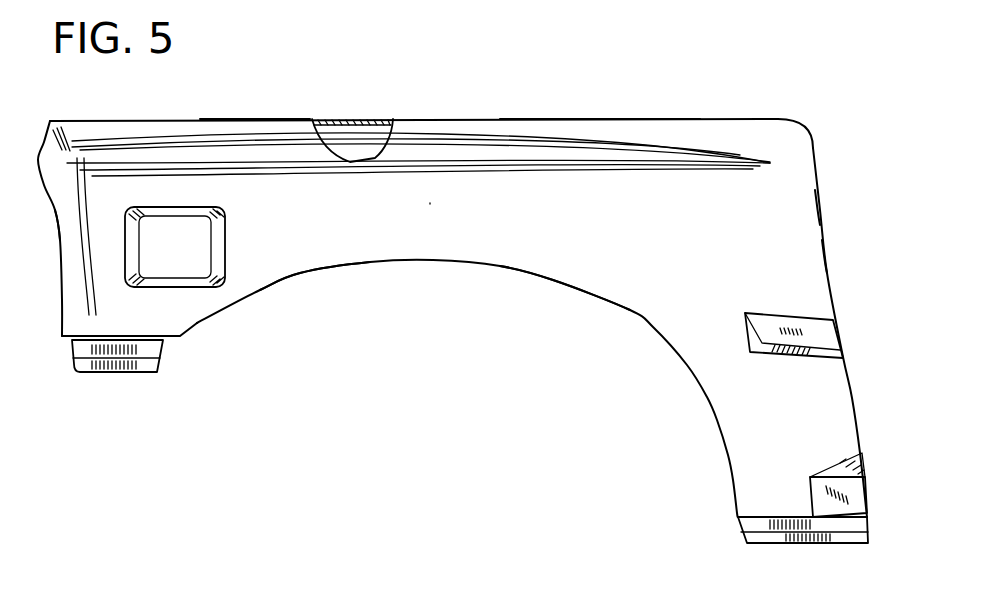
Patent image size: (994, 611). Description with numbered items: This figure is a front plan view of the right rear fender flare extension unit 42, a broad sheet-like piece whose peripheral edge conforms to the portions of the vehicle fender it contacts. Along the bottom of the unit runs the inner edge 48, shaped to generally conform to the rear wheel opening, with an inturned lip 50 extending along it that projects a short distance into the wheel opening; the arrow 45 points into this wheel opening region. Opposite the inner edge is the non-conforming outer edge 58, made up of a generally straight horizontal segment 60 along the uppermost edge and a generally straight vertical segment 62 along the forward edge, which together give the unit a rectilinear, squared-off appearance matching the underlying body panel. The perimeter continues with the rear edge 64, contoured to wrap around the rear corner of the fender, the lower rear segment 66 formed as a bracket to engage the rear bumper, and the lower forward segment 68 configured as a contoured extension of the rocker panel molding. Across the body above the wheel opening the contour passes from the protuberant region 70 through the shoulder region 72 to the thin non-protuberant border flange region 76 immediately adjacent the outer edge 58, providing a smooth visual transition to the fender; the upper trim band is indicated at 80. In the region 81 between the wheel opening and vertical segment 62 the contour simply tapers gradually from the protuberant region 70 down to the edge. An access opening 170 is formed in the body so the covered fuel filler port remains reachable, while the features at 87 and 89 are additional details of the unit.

The right rear fender flare extension unit 42 is at (675, 245).
The wheel well opening 45 is at (476, 307).
The inner edge 48 is at (315, 274).
The inturned lip 50 is at (553, 281).
The outer edge 58 is at (557, 118).
The horizontal segment 60 is at (632, 118).
The vertical segment 62 is at (828, 272).
The rear edge 64 is at (60, 223).
The lower rear segment 66 is at (117, 376).
The lower forward segment 68 is at (813, 546).
The protuberant region 70 is at (430, 203).
The shoulder region 72 is at (433, 167).
The non-protuberant border flange region 76 is at (433, 140).
The top trim 80 is at (261, 106).
The region between wheel opening and vertical edge 81 is at (724, 396).
The side marker lamp 87 is at (838, 342).
The mounting bump 89 is at (353, 135).
The access opening 170 is at (167, 281).